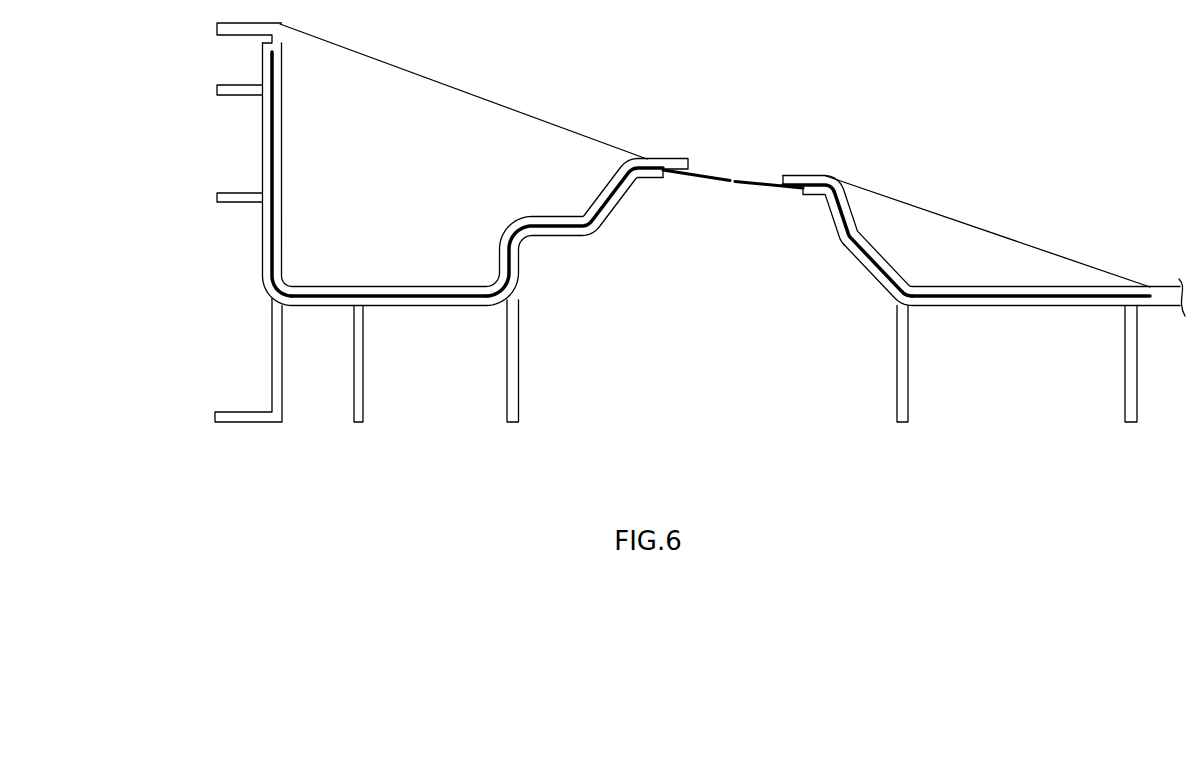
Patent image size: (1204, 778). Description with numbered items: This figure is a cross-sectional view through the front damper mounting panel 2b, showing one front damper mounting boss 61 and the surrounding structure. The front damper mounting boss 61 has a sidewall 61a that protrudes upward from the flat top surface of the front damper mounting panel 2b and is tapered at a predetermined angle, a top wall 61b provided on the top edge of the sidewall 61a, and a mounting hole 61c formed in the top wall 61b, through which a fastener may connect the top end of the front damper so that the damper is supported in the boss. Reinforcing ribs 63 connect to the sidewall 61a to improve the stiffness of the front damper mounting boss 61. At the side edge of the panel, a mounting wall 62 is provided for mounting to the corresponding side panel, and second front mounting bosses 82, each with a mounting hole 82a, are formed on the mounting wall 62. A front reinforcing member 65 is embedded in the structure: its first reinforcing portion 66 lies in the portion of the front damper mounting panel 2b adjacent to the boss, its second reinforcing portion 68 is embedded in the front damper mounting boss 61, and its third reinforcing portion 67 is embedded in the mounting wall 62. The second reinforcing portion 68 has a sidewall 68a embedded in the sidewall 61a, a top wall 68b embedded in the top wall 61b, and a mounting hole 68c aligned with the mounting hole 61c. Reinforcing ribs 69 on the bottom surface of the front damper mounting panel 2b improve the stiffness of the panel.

The front damper mounting panel 2b is at (1167, 279).
The front damper mounting boss 61 is at (829, 174).
The sidewall 61a is at (852, 221).
The top wall 61b is at (663, 157).
The mounting hole 61c is at (785, 174).
The mounting wall 62 is at (283, 68).
The reinforcing rib 63 is at (417, 108).
The front reinforcing member 65 is at (743, 273).
The first reinforcing portion 66 is at (430, 298).
The third reinforcing portion 67 is at (275, 127).
The second reinforcing portion 68 is at (741, 188).
The sidewall 68a is at (840, 229).
The top wall 68b is at (771, 186).
The mounting hole 68c is at (735, 178).
The reinforcing rib 69 is at (355, 395).
The second front mounting boss 82 is at (238, 203).
The mounting hole 82a is at (241, 146).